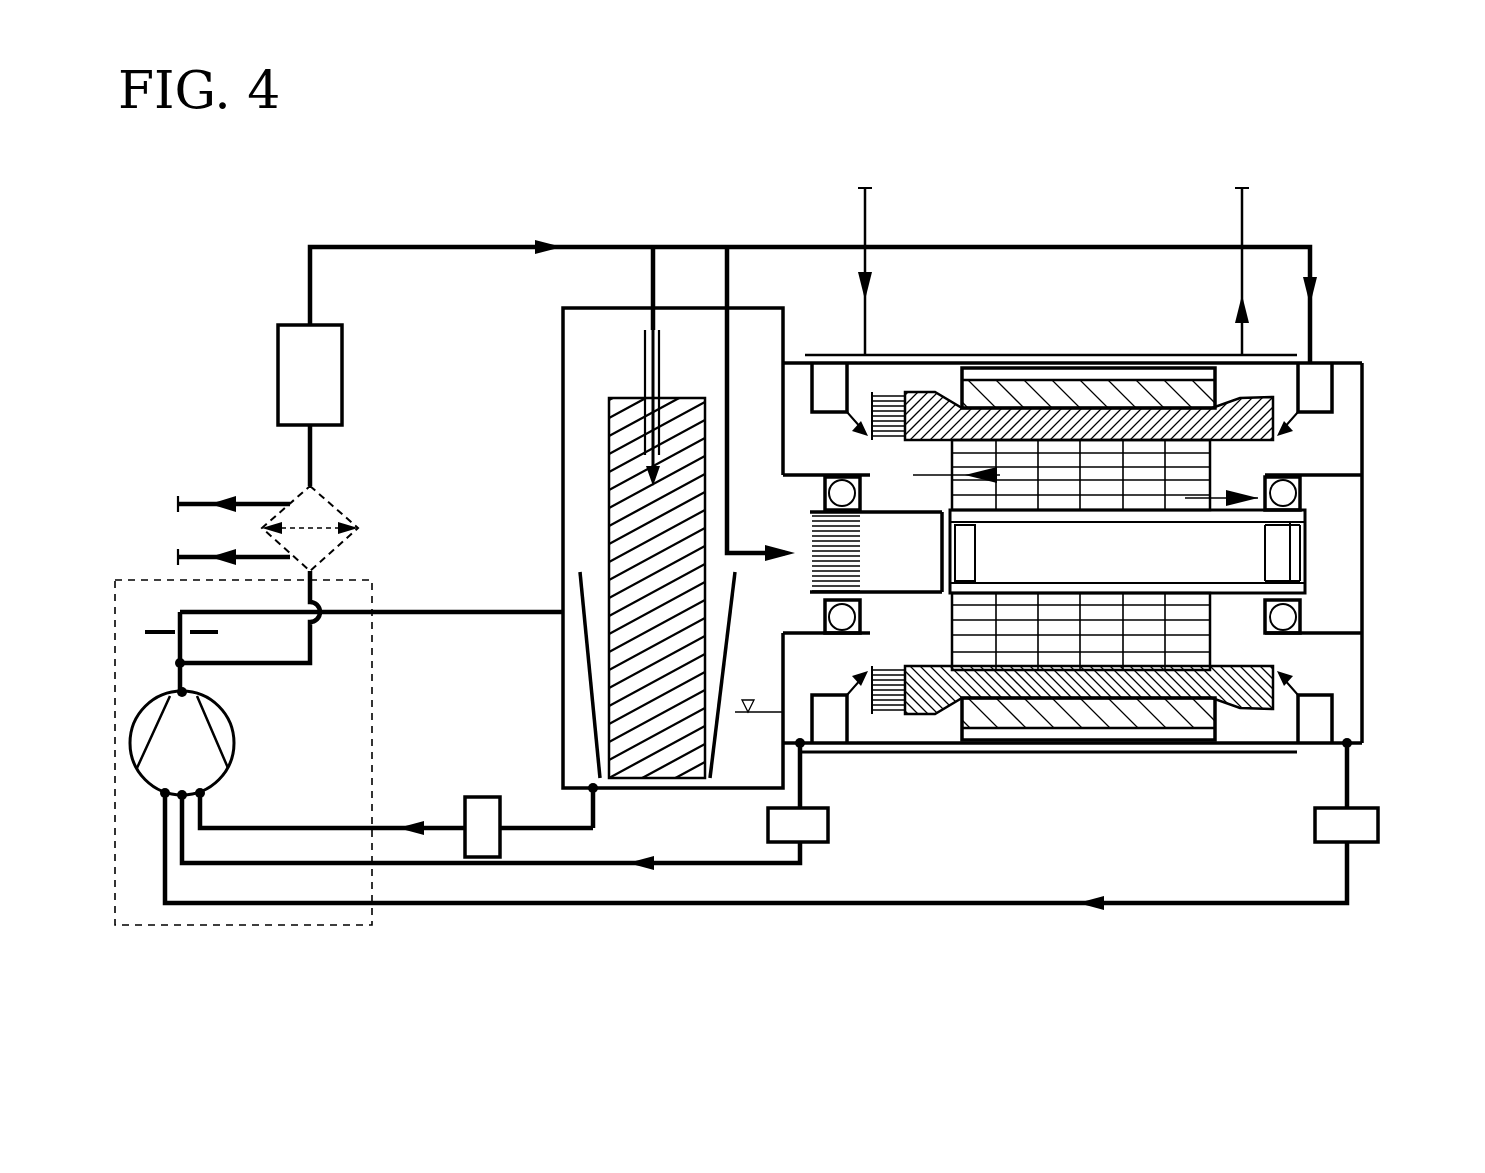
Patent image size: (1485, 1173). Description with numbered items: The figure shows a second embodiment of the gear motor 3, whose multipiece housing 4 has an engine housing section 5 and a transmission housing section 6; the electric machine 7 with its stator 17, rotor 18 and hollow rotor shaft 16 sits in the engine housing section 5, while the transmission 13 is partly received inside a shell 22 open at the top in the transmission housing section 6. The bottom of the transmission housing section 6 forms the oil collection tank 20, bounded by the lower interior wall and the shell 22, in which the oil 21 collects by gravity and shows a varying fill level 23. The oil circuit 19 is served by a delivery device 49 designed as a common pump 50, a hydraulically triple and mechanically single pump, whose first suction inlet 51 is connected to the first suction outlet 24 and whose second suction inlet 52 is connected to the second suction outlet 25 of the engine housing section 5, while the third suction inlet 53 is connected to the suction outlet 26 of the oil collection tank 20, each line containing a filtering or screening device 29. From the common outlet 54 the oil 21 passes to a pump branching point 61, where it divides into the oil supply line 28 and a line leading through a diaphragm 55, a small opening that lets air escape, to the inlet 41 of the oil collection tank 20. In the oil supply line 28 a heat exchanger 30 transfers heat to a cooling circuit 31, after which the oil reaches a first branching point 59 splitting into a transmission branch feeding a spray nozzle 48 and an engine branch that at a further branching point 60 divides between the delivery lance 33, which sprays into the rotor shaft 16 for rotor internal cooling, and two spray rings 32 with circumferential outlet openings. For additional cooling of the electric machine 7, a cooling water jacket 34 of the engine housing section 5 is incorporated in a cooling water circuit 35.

The gear motor 3 is at (1016, 208).
The housing 4 is at (1392, 405).
The engine housing section 5 is at (1350, 362).
The transmission housing section 6 is at (617, 305).
The electric machine 7 is at (1310, 460).
The transmission 13 is at (607, 497).
The rotor shaft 16 is at (870, 520).
The stator 17 is at (948, 722).
The rotor 18 is at (905, 722).
The oil circuit 19 is at (433, 222).
The oil collection tank 20 is at (548, 742).
The oil 21 is at (758, 770).
The shell 22 is at (736, 598).
The fill level 23 is at (748, 698).
The first suction outlet 24 is at (806, 749).
The second suction outlet 25 is at (1352, 744).
The suction outlet 26 is at (595, 793).
The oil supply line 28 is at (312, 462).
The filtering or screening device 29 is at (342, 390).
The heat exchanger 30 is at (345, 538).
The cooling circuit 31 is at (197, 486).
The spray rings 32 is at (853, 388).
The delivery lance 33 is at (870, 622).
The cooling water jacket 34 is at (1080, 358).
The cooling water circuit 35 is at (1246, 207).
The inlet 41 is at (578, 602).
The spray nozzle 48 is at (645, 372).
The delivery device 49 is at (197, 580).
The common pump 50 is at (236, 749).
The first suction inlet 51 is at (182, 790).
The second suction inlet 52 is at (163, 798).
The third suction inlet 53 is at (206, 793).
The common outlet 54 is at (179, 690).
The diaphragm 55 is at (160, 628).
The first branching point 59 is at (654, 242).
The branching point 60 is at (728, 242).
The pump branching point 61 is at (186, 665).